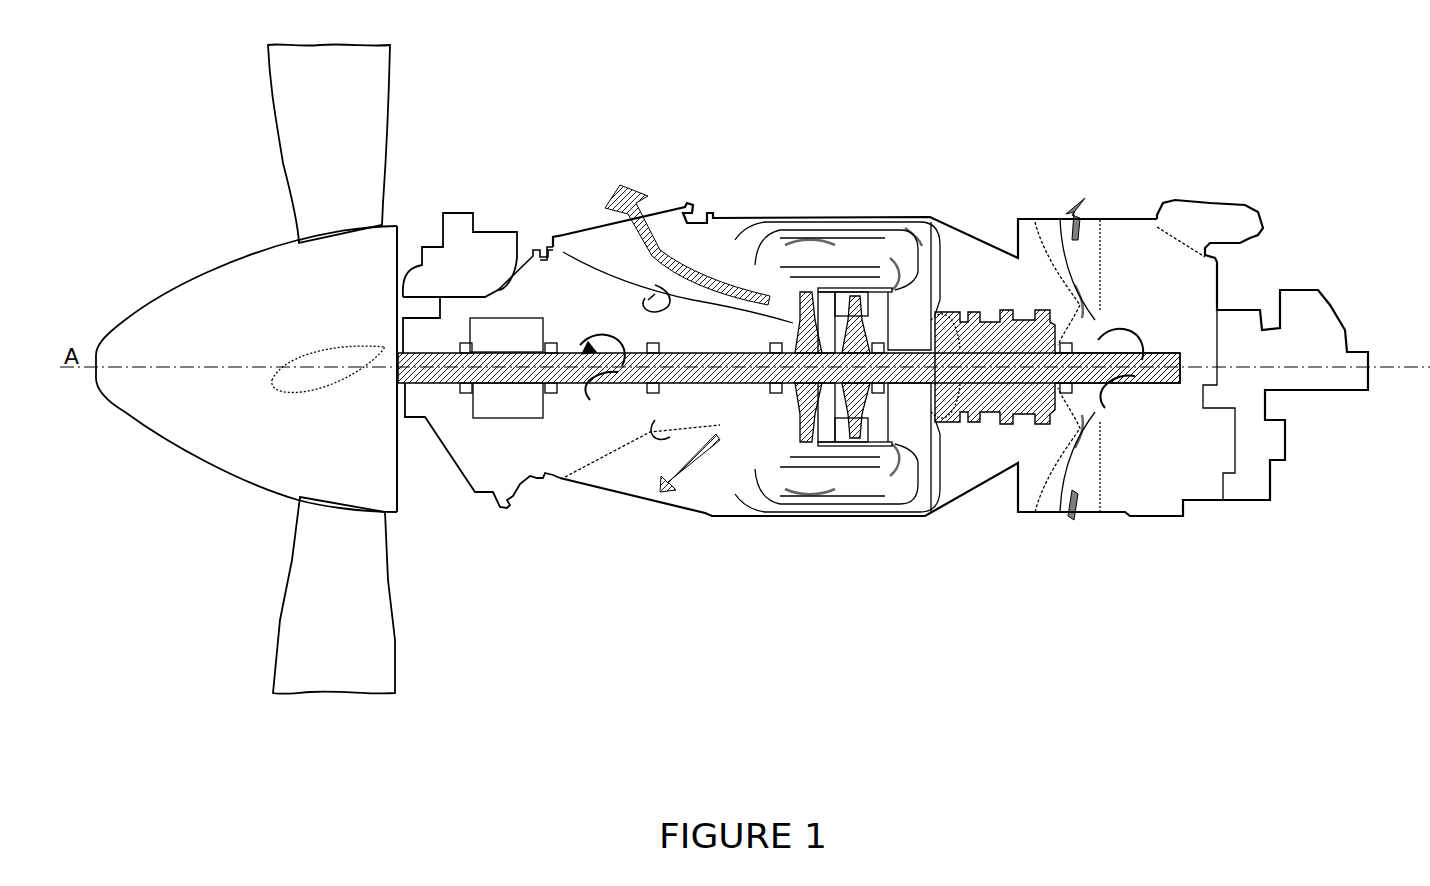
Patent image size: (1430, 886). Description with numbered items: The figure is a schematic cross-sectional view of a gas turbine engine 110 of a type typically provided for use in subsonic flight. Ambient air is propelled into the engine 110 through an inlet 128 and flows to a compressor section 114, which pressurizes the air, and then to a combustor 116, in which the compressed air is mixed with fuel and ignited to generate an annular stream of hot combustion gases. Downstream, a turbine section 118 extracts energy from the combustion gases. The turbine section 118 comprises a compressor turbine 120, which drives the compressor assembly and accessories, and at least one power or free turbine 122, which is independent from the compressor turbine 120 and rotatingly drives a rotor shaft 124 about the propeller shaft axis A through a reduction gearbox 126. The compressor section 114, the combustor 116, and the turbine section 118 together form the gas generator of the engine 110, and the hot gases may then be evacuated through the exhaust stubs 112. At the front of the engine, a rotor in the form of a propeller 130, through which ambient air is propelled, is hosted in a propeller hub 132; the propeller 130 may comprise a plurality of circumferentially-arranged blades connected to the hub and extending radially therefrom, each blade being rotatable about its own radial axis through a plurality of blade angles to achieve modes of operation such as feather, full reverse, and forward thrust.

The gas turbine engine 110 is at (740, 108).
The inlet 112 is at (1085, 195).
The compressor section 114 is at (972, 258).
The combustor 116 is at (862, 248).
The turbine section 118 is at (800, 368).
The compressor turbine 120 is at (878, 368).
The power or free turbine 122 is at (797, 372).
The rotor shaft 124 is at (525, 407).
The reduction gearbox 126 is at (508, 386).
The exhaust stubs 128 is at (600, 193).
The propeller 130 is at (300, 117).
The propeller hub 132 is at (222, 283).